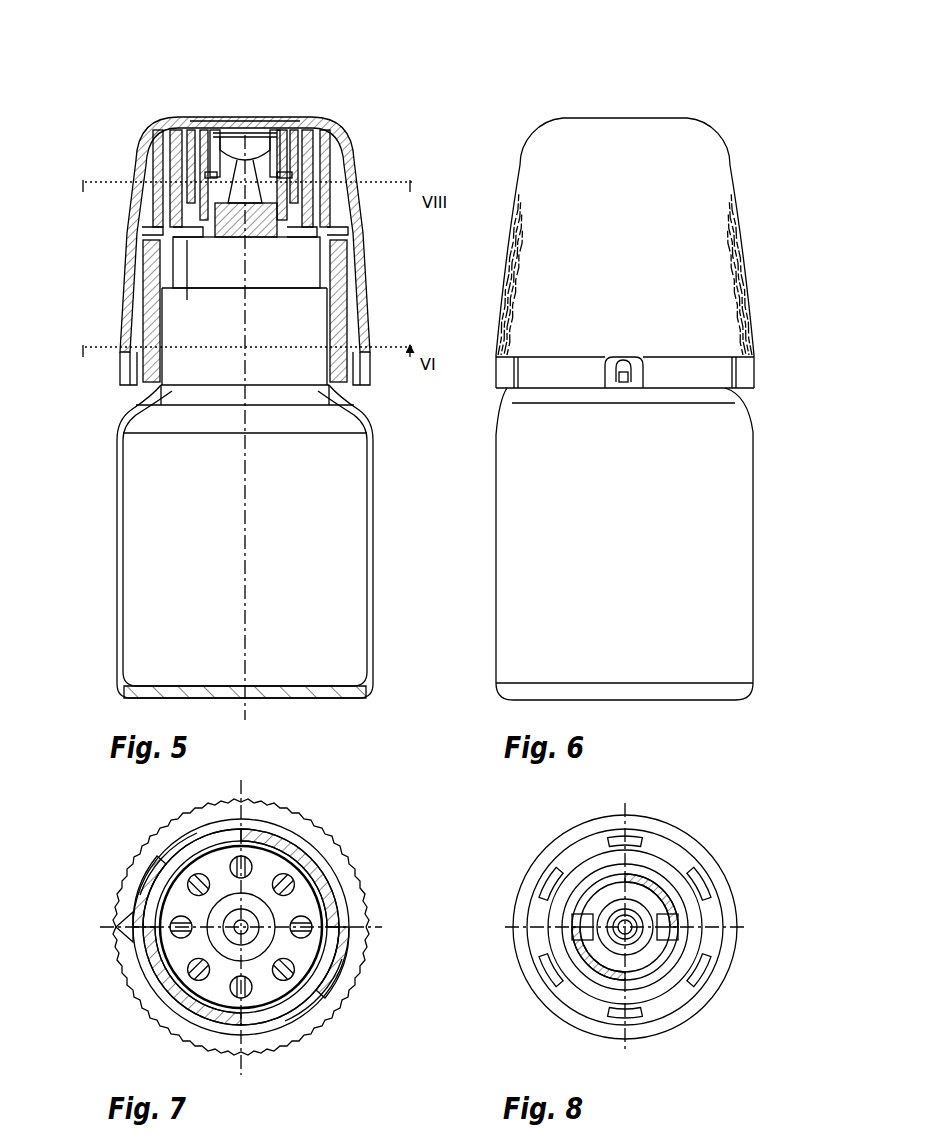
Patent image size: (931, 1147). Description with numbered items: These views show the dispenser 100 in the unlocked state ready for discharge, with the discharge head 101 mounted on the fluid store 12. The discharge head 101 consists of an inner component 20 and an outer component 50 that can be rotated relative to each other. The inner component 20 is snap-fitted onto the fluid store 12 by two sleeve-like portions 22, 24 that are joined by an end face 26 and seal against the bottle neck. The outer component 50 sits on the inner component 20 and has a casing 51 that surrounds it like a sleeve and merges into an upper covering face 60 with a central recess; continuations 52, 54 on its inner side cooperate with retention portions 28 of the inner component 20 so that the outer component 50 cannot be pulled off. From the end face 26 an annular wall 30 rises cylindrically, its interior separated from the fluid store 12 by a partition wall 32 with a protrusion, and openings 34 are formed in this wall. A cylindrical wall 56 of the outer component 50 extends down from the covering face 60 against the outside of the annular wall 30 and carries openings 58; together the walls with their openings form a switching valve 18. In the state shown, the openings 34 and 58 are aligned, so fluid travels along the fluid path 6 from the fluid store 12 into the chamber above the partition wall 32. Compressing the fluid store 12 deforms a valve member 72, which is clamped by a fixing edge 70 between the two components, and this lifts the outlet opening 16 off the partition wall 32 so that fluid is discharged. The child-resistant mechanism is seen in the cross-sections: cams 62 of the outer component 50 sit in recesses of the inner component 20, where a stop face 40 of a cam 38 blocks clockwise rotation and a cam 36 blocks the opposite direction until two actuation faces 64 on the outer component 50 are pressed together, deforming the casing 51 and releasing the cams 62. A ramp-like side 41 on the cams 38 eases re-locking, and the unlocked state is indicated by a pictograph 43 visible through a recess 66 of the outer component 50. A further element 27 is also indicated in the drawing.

In FIG. 5, the dispenser 100 is at (107, 127).
In FIG. 6, the dispenser 100 is at (493, 125).
In FIG. 5, the fluid store 12 is at (108, 540).
In FIG. 5, the inner component 20 is at (138, 388).
In FIG. 5, the outer component 50 is at (124, 390).
In FIG. 5, the casing 51 is at (124, 275).
In FIG. 5, the continuation 52 is at (142, 150).
In FIG. 5, the continuation 54 is at (153, 165).
In FIG. 5, the cylindrical wall 56 is at (176, 165).
In FIG. 8, the cylindrical wall 56 is at (664, 954).
In FIG. 5, the openings 58 is at (193, 150).
In FIG. 8, the openings 58 is at (673, 934).
In FIG. 5, the upper covering face 60 is at (205, 145).
In FIG. 5, the outlet opening 16 is at (266, 130).
In FIG. 5, the valve member 72 is at (249, 158).
In FIG. 5, the openings 34 is at (247, 158).
In FIG. 8, the openings 34 is at (668, 908).
In FIG. 5, the fixing edge 70 is at (223, 158).
In FIG. 5, the partition wall 32 is at (283, 150).
In FIG. 5, the annular wall 30 is at (268, 196).
In FIG. 8, the annular wall 30 is at (634, 892).
In FIG. 5, the retention portions 28 is at (323, 207).
In FIG. 5, the aperture 27 is at (180, 213).
In FIG. 7, the aperture 27 is at (306, 914).
In FIG. 5, the end face 26 is at (327, 224).
In FIG. 7, the end face 26 is at (302, 905).
In FIG. 5, the fluid path 6 is at (188, 266).
In FIG. 5, the switching valve 18 is at (205, 200).
In FIG. 5, the sleeve-like portion 24 is at (324, 270).
In FIG. 5, the sleeve-like portion 22 is at (345, 298).
In FIG. 5, the cam 36 is at (350, 347).
In FIG. 7, the cam 36 is at (352, 958).
In FIG. 5, the discharge head 101 is at (108, 366).
In FIG. 6, the actuation faces 64 is at (748, 280).
In FIG. 7, the actuation faces 64 is at (300, 812).
In FIG. 6, the recess 66 is at (614, 373).
In FIG. 6, the pictograph 43 is at (619, 389).
In FIG. 7, the cams 62 is at (122, 938).
In FIG. 7, the stop face 40 is at (280, 1028).
In FIG. 7, the cam 38 is at (284, 1038).
In FIG. 7, the ramp-like side 41 is at (268, 1050).